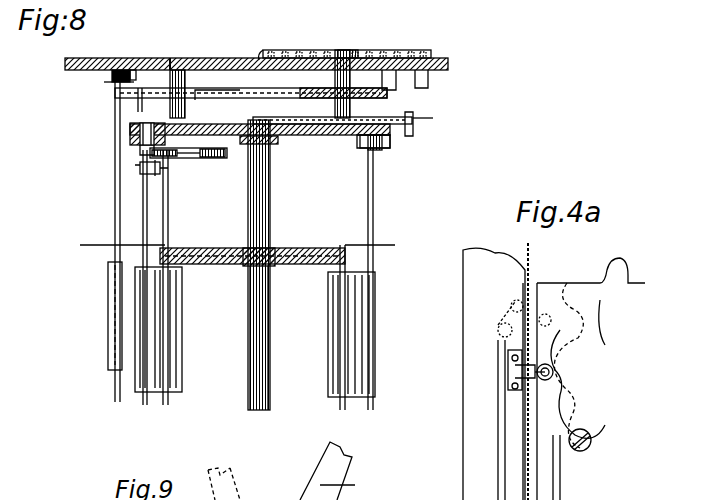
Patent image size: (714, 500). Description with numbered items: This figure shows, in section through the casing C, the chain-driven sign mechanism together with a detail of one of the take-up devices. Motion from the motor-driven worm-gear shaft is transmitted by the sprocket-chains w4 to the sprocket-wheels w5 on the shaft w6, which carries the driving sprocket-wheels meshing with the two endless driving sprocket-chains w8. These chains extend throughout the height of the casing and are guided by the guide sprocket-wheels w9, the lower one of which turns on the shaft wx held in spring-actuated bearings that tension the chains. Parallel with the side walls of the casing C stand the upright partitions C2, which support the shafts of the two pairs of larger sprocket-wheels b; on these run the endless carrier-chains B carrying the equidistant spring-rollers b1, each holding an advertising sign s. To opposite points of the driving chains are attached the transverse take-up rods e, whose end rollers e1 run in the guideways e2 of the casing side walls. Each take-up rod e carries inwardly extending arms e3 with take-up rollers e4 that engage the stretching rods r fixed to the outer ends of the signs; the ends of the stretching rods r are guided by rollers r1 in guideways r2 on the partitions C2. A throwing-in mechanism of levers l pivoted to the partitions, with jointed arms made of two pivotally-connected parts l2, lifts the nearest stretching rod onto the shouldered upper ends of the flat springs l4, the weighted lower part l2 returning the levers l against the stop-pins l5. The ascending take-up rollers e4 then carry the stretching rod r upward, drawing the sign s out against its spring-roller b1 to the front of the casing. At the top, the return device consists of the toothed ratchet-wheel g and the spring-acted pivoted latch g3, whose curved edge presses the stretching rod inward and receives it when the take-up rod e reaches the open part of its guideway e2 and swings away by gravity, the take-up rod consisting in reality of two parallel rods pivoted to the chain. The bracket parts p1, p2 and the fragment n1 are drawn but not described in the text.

In FIG. 8, the casing C is at (220, 70).
In FIG. 4A, the casing C is at (494, 374).
In FIG. 8, the upright partitions C2 is at (332, 136).
In FIG. 4A, the upright partitions C2 is at (556, 292).
In FIG. 8, the shaft of lower guide sprocket-wheel wx is at (170, 58).
In FIG. 8, the sprocket-chains w4 is at (345, 44).
In FIG. 8, the sprocket-wheels w5 is at (350, 45).
In FIG. 8, the shaft w6 is at (273, 84).
In FIG. 8, the endless driving sprocket-chains w8 is at (251, 88).
In FIG. 4A, the endless driving sprocket-chains w8 is at (532, 262).
In FIG. 8, the guide sprocket-wheels w9 is at (305, 93).
In FIG. 8, the take-up rods e is at (113, 92).
In FIG. 4A, the take-up rods e is at (508, 388).
In FIG. 8, the anti-friction rollers e1 is at (132, 70).
In FIG. 4A, the anti-friction rollers e1 is at (505, 373).
In FIG. 8, the guideways e2 is at (112, 78).
In FIG. 4A, the guideways e2 is at (515, 418).
In FIG. 8, the arms e3 is at (148, 172).
In FIG. 4A, the arms e3 is at (553, 370).
In FIG. 8, the take-up rollers e4 is at (177, 166).
In FIG. 4A, the take-up rollers e4 is at (555, 378).
In FIG. 8, the levers l is at (418, 119).
In FIG. 8, the pivotally-connected parts l2 is at (198, 156).
In FIG. 8, the flat springs l4 is at (140, 122).
In FIG. 8, the stop-pins l5 is at (448, 102).
In FIG. 8, the bracket p1 is at (145, 138).
In FIG. 8, the bracket arm p2 is at (135, 136).
In FIG. 8, the stretching rods r is at (148, 220).
In FIG. 8, the rollers r1 is at (392, 140).
In FIG. 4A, the rollers r1 is at (545, 438).
In FIG. 8, the guideways r2 is at (386, 146).
In FIG. 8, the sprocket-wheels b is at (230, 266).
In FIG. 8, the spring-rollers b1 is at (338, 414).
In FIG. 8, the endless carrier-chains B is at (223, 249).
In FIG. 8, the advertising signs s is at (183, 324).
In FIG. 4A, the ratchet-wheel g is at (580, 365).
In FIG. 4A, the pivoted latch g3 is at (583, 451).
In FIG. 9, the plate n1 is at (337, 471).